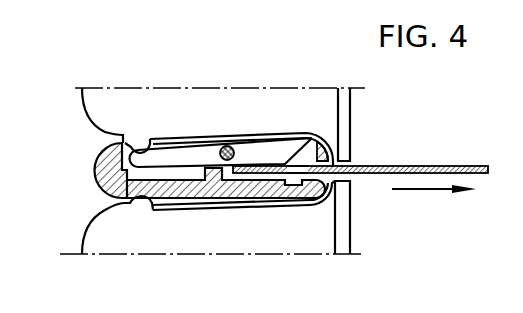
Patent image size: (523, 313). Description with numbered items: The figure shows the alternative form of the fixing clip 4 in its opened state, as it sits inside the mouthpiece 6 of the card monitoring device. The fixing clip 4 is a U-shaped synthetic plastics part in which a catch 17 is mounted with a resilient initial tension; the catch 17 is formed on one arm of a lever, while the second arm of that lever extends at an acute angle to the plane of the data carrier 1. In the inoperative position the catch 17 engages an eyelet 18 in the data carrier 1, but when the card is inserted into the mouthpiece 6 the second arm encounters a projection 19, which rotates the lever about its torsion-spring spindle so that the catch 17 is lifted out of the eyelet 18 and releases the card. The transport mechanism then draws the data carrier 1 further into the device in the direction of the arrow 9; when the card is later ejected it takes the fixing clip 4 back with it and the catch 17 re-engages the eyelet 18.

The data carrier 1 is at (421, 164).
The fixing clip 4 is at (96, 176).
The mouthpiece 6 is at (214, 115).
The arrow 9 is at (433, 190).
The catch 17 is at (296, 160).
The eyelet 18 is at (302, 163).
The projection 19 is at (142, 142).